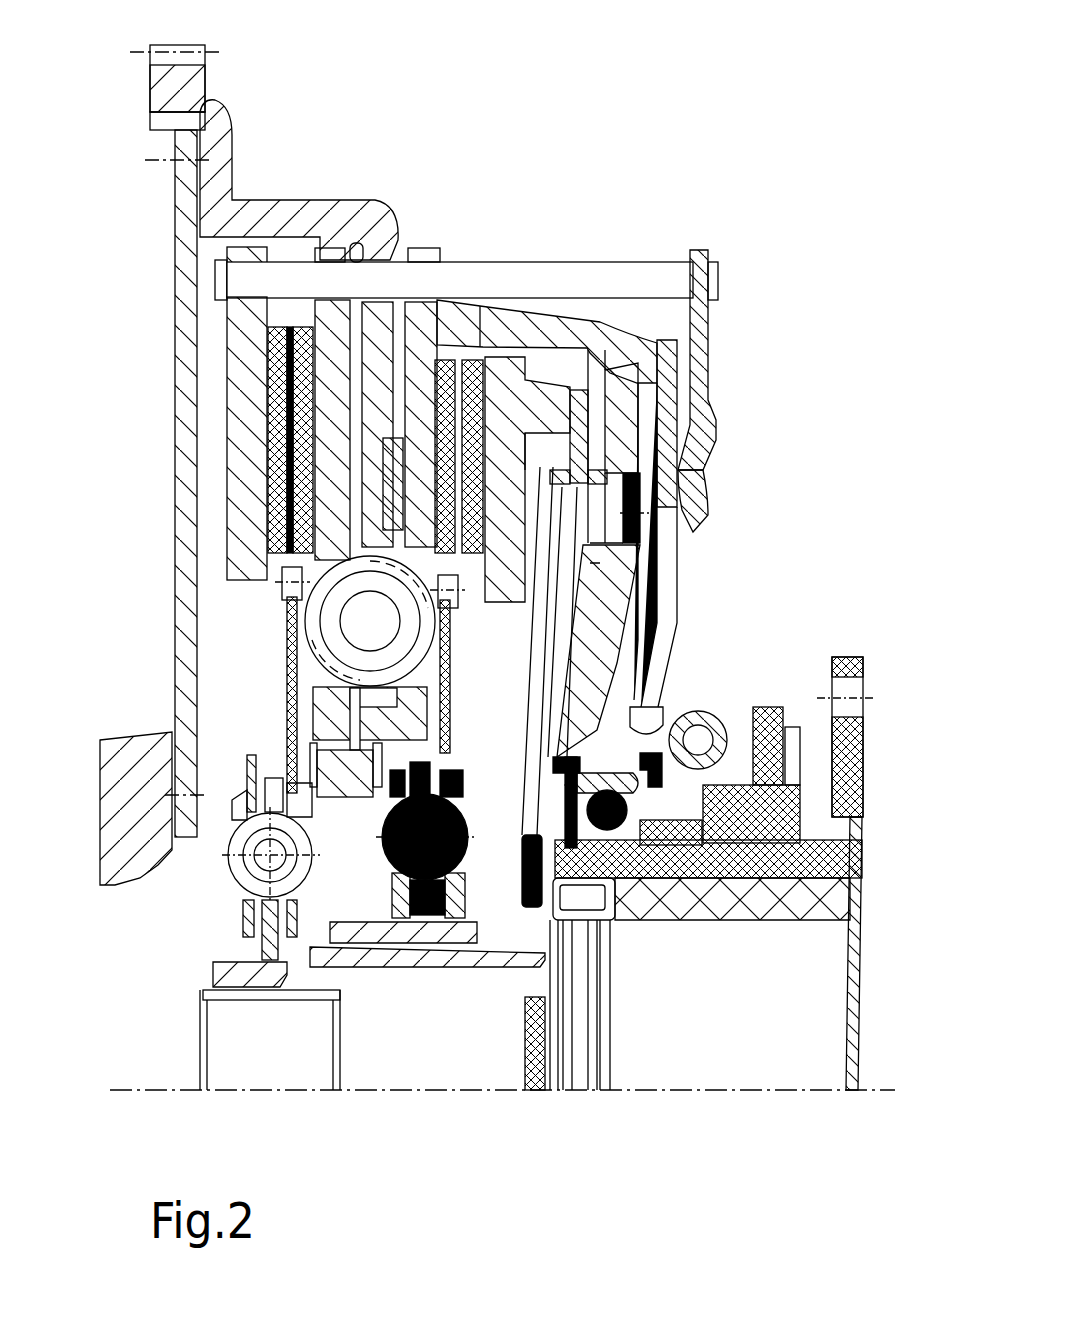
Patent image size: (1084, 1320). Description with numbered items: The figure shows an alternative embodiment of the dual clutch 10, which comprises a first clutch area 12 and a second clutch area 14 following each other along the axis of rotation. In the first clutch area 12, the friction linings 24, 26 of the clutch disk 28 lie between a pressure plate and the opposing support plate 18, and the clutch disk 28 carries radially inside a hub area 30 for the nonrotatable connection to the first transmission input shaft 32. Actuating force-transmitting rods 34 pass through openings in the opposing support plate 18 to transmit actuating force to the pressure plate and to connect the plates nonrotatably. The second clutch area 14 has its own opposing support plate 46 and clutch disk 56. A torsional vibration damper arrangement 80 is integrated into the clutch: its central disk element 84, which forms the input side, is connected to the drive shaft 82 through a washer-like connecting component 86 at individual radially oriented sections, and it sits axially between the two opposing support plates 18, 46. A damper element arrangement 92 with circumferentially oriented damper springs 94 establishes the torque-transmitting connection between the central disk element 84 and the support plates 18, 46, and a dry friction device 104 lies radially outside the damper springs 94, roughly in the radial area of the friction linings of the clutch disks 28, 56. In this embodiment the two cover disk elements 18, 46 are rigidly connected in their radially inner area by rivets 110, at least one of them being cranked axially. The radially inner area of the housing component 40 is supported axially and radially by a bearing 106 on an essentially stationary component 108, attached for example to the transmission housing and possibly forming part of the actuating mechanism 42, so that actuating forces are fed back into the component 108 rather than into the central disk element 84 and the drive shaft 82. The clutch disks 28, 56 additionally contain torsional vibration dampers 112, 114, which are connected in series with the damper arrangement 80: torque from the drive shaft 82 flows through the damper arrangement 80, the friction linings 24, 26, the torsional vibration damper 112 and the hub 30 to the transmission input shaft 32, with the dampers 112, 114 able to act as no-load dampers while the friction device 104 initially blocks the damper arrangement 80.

The dual clutch 10 is at (575, 90).
The first clutch area 12 is at (320, 115).
The second clutch area 14 is at (626, 120).
The opposing support plate 18 is at (323, 313).
The friction lining 24 is at (268, 448).
The friction lining 26 is at (313, 493).
The clutch disk 28 is at (213, 878).
The hub area 30 is at (228, 983).
The first transmission input shaft 32 is at (253, 1077).
The actuating force-transmitting rods 34 is at (605, 275).
The housing component 40 is at (675, 262).
The actuating mechanism 42 is at (787, 670).
The opposing support plate 46 is at (398, 407).
The clutch disk 56 is at (507, 653).
The torsional vibration damper arrangement 80 is at (418, 166).
The drive shaft 82 is at (105, 745).
The central disk element 84 is at (390, 340).
The connecting component 86 is at (178, 312).
The damper element arrangement 92 is at (290, 680).
The damper springs 94 is at (313, 643).
The friction device 104 is at (480, 312).
The bearing 106 is at (610, 780).
The stationary component 108 is at (860, 805).
The rivets 110 is at (345, 770).
The torsional vibration damper 112 is at (217, 938).
The torsional vibration damper 114 is at (498, 723).